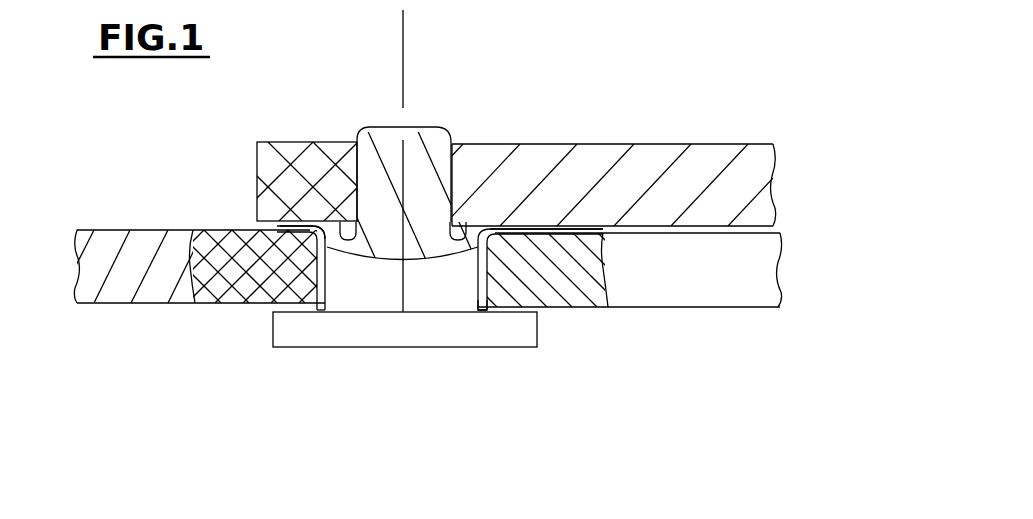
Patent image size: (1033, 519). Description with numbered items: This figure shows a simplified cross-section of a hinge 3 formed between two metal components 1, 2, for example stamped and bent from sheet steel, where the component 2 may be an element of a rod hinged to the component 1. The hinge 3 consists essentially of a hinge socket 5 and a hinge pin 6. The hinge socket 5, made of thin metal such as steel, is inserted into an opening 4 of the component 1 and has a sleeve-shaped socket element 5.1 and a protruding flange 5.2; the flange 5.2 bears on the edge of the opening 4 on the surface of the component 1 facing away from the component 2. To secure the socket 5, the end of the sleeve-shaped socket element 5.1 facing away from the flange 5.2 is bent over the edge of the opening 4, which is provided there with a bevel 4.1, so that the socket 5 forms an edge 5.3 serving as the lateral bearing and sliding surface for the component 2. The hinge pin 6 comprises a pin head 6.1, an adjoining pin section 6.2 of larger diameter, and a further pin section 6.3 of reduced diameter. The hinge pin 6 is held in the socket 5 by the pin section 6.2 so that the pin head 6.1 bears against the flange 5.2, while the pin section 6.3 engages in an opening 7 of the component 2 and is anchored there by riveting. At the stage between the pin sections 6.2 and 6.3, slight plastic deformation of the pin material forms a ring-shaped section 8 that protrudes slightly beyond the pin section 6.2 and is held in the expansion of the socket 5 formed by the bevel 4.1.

The component 1 is at (110, 288).
The component 2 is at (637, 178).
The hinge 3 is at (511, 105).
The opening 4 is at (318, 264).
The bevel 4.1 is at (292, 246).
The hinge socket 5 is at (333, 306).
The sleeve-shaped socket element 5.1 is at (510, 280).
The flange 5.2 is at (495, 312).
The edge 5.3 is at (523, 233).
The hinge pin 6 is at (371, 272).
The pin head 6.1 is at (290, 333).
The pin section 6.2 is at (443, 290).
The pin section 6.3 is at (426, 152).
The opening 7 is at (352, 160).
The ring-shaped section 8 is at (257, 141).